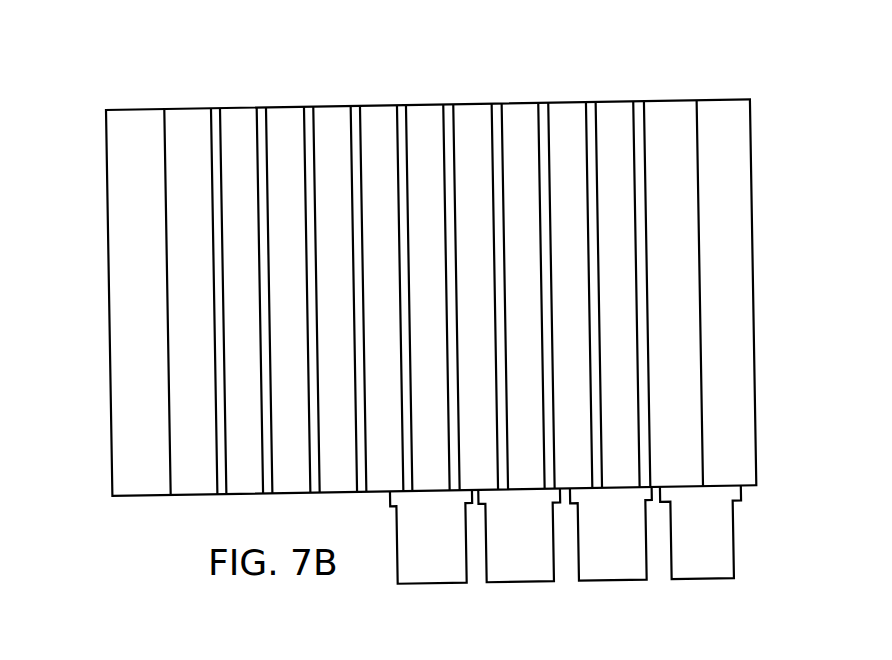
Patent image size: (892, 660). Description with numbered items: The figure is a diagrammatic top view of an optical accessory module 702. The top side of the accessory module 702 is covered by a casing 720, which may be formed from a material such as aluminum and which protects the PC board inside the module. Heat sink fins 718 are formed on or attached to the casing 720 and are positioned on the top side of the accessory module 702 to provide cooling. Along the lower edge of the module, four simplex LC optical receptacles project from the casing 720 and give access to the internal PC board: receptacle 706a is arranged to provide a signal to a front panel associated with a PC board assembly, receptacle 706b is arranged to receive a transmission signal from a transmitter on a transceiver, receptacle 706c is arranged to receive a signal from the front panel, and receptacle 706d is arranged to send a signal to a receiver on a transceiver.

The accessory module 702 is at (110, 70).
The heat sink fins 718 is at (403, 112).
The casing 720 is at (617, 112).
The receptacle 706a is at (428, 573).
The receptacle 706b is at (525, 573).
The receptacle 706c is at (620, 573).
The receptacle 706d is at (710, 573).